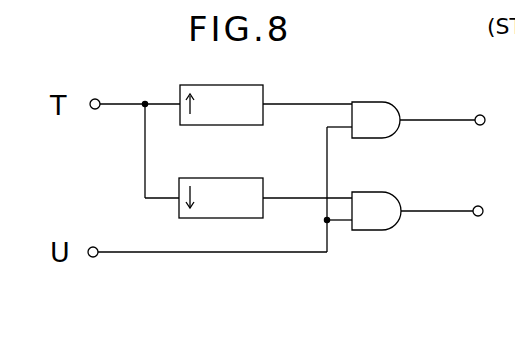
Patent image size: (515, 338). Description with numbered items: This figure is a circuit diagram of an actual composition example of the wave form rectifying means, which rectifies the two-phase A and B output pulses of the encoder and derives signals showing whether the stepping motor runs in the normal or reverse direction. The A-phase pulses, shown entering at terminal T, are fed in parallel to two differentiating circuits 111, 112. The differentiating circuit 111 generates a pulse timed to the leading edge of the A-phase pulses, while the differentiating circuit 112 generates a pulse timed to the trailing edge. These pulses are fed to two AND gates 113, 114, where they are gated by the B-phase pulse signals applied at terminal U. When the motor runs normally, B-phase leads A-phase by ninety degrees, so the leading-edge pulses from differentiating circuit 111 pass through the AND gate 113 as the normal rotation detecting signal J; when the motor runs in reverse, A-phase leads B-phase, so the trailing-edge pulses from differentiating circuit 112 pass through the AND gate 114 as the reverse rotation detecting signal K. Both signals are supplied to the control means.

The differentiating circuit 111 is at (264, 92).
The differentiating circuit 112 is at (264, 186).
The AND gate 113 is at (395, 103).
The AND gate 114 is at (393, 193).